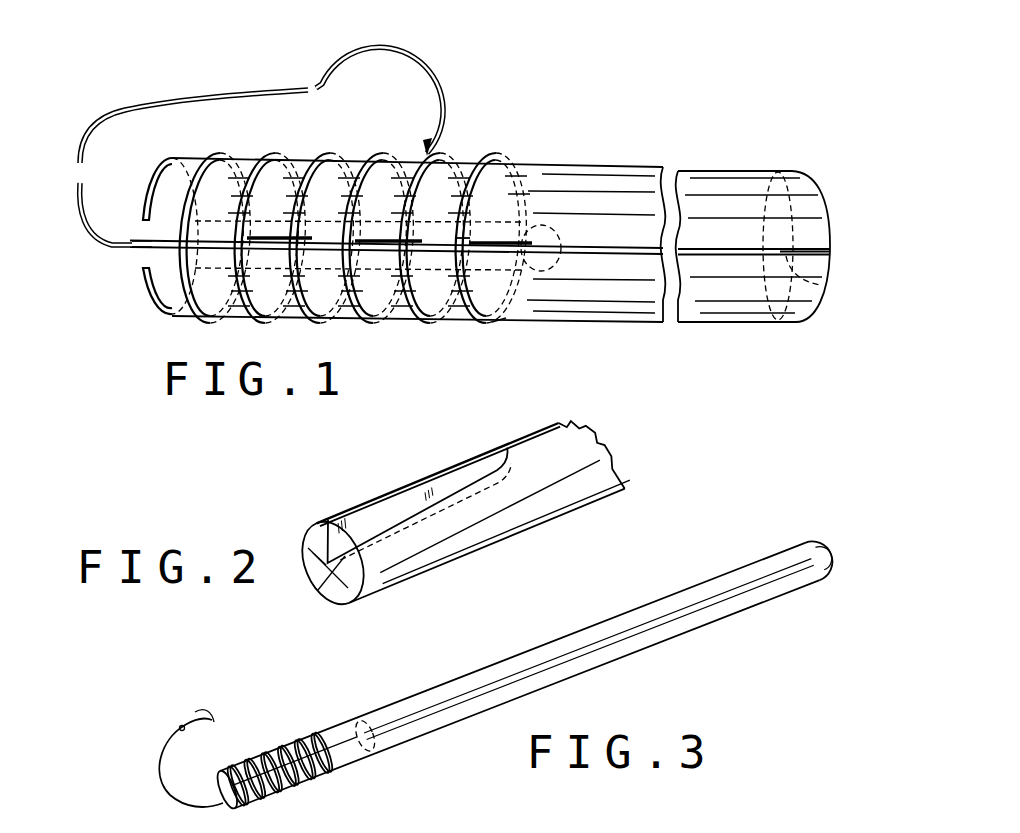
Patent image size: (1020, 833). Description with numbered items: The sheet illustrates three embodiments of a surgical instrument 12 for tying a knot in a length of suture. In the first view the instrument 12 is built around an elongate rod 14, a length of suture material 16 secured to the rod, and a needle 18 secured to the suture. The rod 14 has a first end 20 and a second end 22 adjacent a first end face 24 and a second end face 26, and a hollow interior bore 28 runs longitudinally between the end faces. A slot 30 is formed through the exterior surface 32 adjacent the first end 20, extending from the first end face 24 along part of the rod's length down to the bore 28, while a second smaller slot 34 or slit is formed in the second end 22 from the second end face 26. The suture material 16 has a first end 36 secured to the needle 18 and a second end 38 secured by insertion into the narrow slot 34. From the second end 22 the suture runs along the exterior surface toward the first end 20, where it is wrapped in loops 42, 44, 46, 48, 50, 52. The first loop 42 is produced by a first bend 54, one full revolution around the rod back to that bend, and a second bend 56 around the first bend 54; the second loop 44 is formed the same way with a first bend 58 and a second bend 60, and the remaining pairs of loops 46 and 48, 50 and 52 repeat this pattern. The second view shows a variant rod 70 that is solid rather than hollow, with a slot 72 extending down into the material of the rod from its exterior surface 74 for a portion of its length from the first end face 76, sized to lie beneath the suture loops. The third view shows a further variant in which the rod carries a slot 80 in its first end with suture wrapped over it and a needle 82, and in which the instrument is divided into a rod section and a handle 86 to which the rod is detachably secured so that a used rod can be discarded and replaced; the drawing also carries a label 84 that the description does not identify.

In FIG. 1, the surgical instrument 12 is at (465, 133).
In FIG. 1, the elongate rod 14 is at (620, 192).
In FIG. 1, the length of suture material 16 is at (484, 160).
In FIG. 1, the needle 18 is at (398, 70).
In FIG. 1, the first end 20 is at (176, 327).
In FIG. 1, the second end 22 is at (747, 331).
In FIG. 1, the first end face 24 is at (158, 300).
In FIG. 1, the second end face 26 is at (797, 312).
In FIG. 1, the hollow interior bore 28 is at (132, 256).
In FIG. 1, the slot 30 is at (146, 227).
In FIG. 1, the exterior surface 32 is at (305, 165).
In FIG. 1, the second smaller slot 34 is at (804, 249).
In FIG. 1, the first end of suture material 36 is at (310, 90).
In FIG. 1, the second end of suture material 38 is at (822, 290).
In FIG. 1, the first loop 42 is at (490, 322).
In FIG. 1, the second loop 44 is at (428, 322).
In FIG. 1, the loop 46 is at (378, 322).
In FIG. 1, the loop 48 is at (324, 322).
In FIG. 1, the loop 50 is at (270, 322).
In FIG. 1, the loop 52 is at (210, 322).
In FIG. 1, the first bend 54 is at (506, 318).
In FIG. 1, the second bend 56 is at (562, 250).
In FIG. 1, the first bend of second loop 58 is at (463, 240).
In FIG. 1, the second bend of second loop 60 is at (470, 258).
In FIG. 2, the rod 70 is at (481, 557).
In FIG. 2, the slot 72 is at (443, 494).
In FIG. 2, the exterior surface 74 is at (475, 504).
In FIG. 2, the first end face 76 is at (367, 522).
In FIG. 3, the slot 80 is at (302, 760).
In FIG. 3, the needle 82 is at (172, 790).
In FIG. 3, the wire loop 84 is at (195, 712).
In FIG. 3, the handle 86 is at (589, 649).